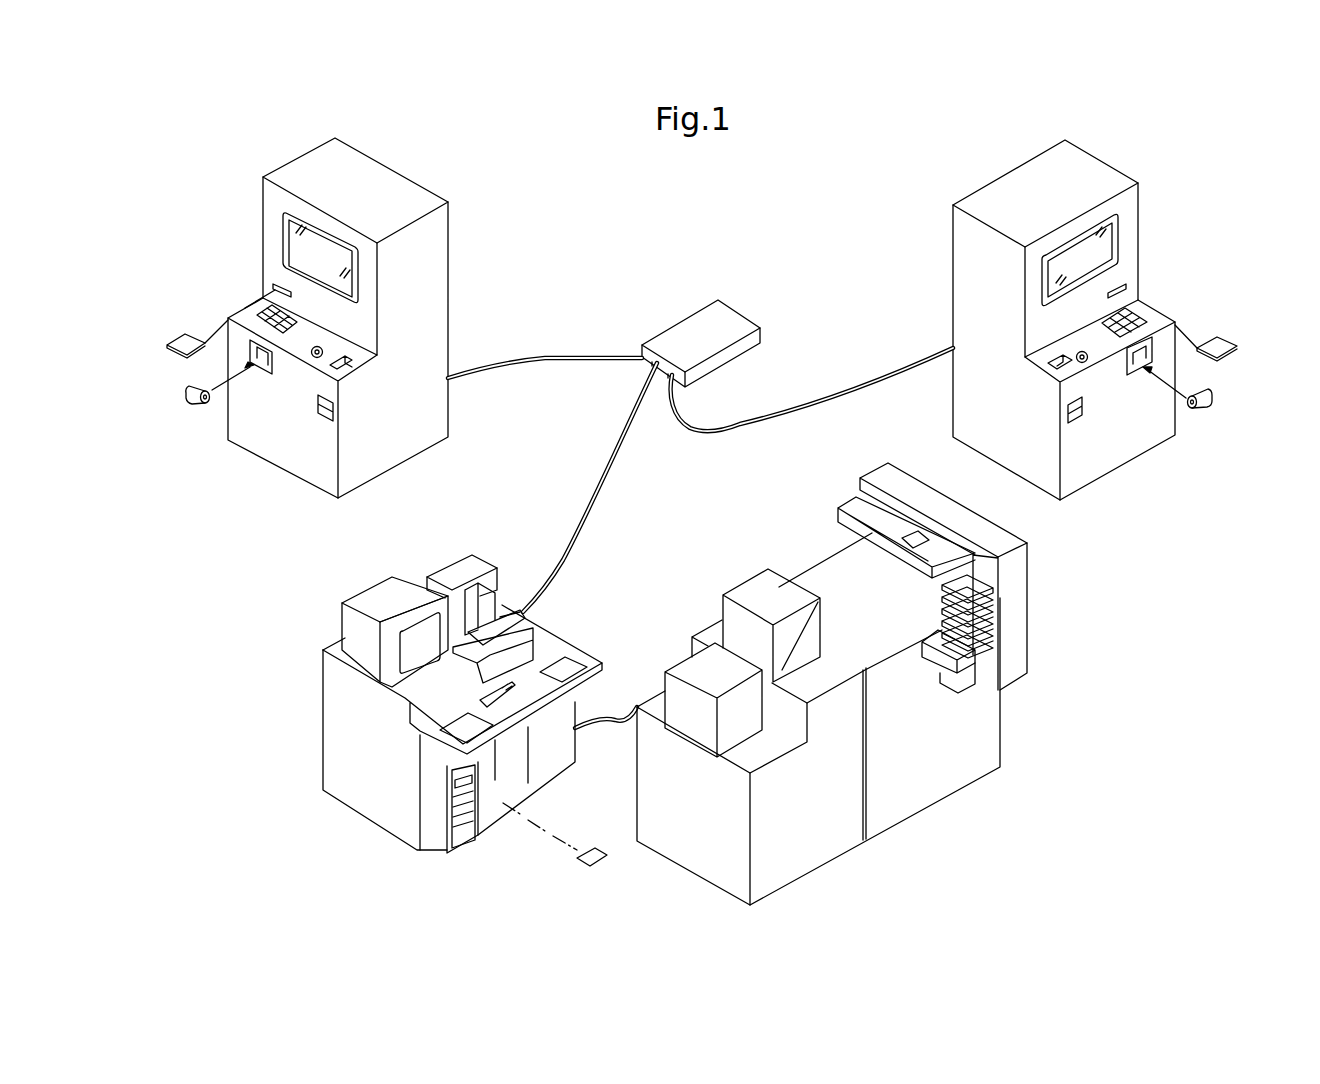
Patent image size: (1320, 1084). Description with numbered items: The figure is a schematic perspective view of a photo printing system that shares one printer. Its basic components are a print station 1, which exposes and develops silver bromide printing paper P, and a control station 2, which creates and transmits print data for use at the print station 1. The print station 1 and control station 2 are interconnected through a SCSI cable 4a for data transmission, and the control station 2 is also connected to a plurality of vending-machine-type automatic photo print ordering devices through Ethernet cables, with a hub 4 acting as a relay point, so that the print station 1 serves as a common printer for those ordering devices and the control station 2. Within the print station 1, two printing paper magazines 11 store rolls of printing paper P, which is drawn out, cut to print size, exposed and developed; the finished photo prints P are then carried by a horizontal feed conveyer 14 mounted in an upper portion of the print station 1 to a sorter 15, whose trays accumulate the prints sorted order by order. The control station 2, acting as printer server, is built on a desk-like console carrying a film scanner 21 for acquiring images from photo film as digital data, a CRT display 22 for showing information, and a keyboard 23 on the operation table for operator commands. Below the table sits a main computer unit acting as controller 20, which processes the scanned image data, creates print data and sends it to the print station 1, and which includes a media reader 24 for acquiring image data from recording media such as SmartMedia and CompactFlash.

The print station 1 is at (836, 673).
The control station 2 is at (426, 705).
The hub 4 is at (690, 325).
The SCSI cable 4a is at (610, 720).
The printing paper magazine 11 is at (683, 655).
The horizontal feed conveyer 14 is at (931, 521).
The sorter 15 is at (957, 658).
The controller 20 is at (438, 840).
The film scanner 21 is at (457, 572).
The CRT display 22 is at (348, 622).
The keyboard 23 is at (503, 690).
The media reader 24 is at (471, 783).
The printing paper P is at (915, 533).